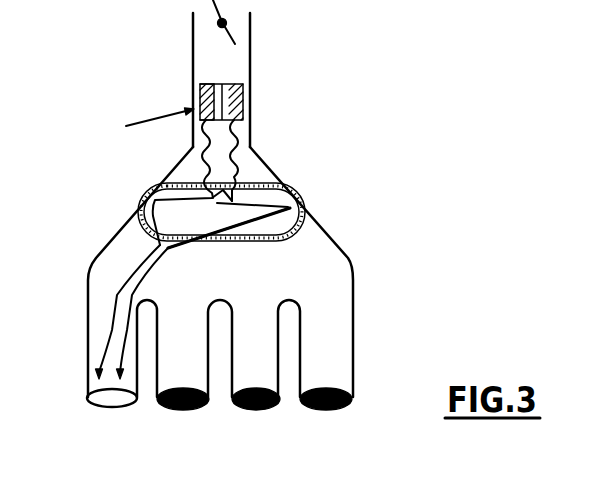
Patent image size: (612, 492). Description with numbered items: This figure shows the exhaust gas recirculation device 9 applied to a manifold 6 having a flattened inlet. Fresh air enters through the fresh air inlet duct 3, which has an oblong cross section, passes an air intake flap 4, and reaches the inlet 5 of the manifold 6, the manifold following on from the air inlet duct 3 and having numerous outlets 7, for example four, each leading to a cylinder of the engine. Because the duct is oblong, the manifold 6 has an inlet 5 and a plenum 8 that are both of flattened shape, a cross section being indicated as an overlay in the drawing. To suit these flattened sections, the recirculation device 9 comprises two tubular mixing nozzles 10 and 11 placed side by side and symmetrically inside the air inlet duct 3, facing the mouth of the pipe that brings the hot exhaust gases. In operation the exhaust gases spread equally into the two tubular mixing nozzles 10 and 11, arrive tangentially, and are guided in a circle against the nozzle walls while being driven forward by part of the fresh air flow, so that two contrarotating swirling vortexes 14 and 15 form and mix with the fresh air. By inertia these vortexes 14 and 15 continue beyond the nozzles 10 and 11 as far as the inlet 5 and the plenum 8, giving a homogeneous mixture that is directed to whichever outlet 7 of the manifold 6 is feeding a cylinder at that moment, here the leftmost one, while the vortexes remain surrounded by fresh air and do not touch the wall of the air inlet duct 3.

The fresh air inlet duct 3 is at (193, 51).
The air intake flap 4 is at (235, 44).
The inlet 5 is at (253, 142).
The manifold 6 is at (82, 267).
The outlets 7 is at (183, 412).
The plenum 8 is at (263, 247).
The recirculation device 9 is at (151, 124).
The tubular mixing nozzle 10 is at (194, 103).
The tubular mixing nozzle 11 is at (244, 102).
The swirling vortex 14 is at (202, 170).
The swirling vortex 15 is at (252, 164).